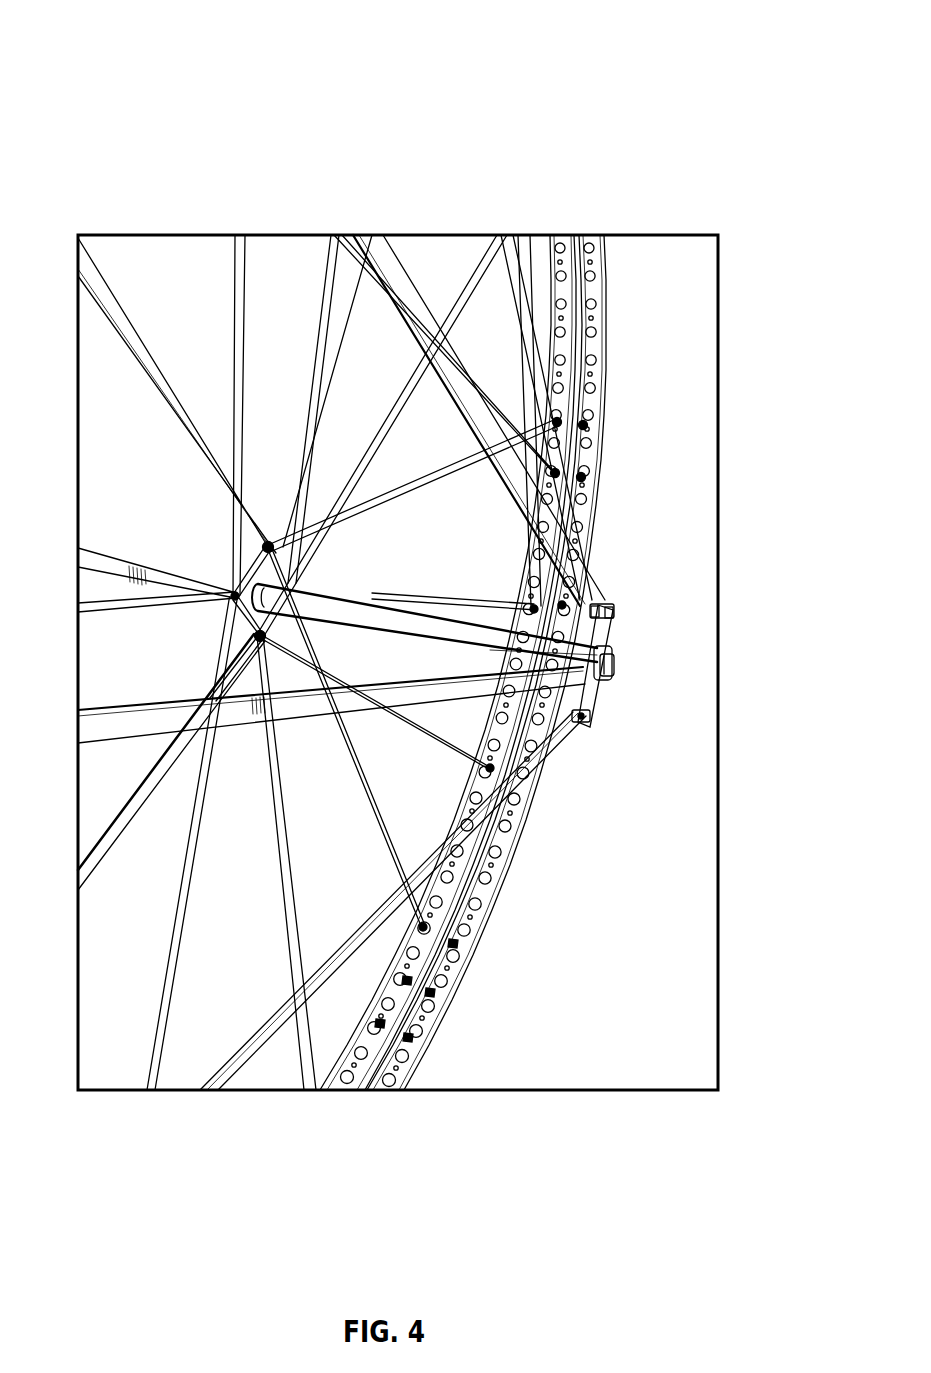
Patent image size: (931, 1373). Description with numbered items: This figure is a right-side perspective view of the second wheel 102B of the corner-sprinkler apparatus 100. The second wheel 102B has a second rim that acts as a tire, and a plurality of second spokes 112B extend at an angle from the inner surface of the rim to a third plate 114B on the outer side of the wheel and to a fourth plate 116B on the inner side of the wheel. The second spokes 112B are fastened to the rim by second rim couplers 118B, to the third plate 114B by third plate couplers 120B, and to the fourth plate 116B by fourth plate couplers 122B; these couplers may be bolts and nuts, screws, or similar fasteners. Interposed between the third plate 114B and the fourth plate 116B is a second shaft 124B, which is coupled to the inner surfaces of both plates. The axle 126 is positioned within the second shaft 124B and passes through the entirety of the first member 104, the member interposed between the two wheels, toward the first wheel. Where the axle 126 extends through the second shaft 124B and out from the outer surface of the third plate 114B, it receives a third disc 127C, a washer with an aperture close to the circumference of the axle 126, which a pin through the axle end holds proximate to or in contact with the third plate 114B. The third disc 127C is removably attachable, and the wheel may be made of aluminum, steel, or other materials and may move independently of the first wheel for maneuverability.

The corner-sprinkler apparatus 100 is at (134, 34).
The second wheel 102B is at (578, 300).
The first member 104 is at (232, 594).
The second spokes 112B is at (582, 571).
The third plate 114B is at (614, 621).
The fourth plate 116B is at (258, 636).
The second rim couplers 118B is at (586, 427).
The third plate couplers 120B is at (614, 609).
The fourth plate couplers 122B is at (268, 547).
The second shaft 124B is at (591, 716).
The axle 126 is at (614, 661).
The third disc 127C is at (613, 654).